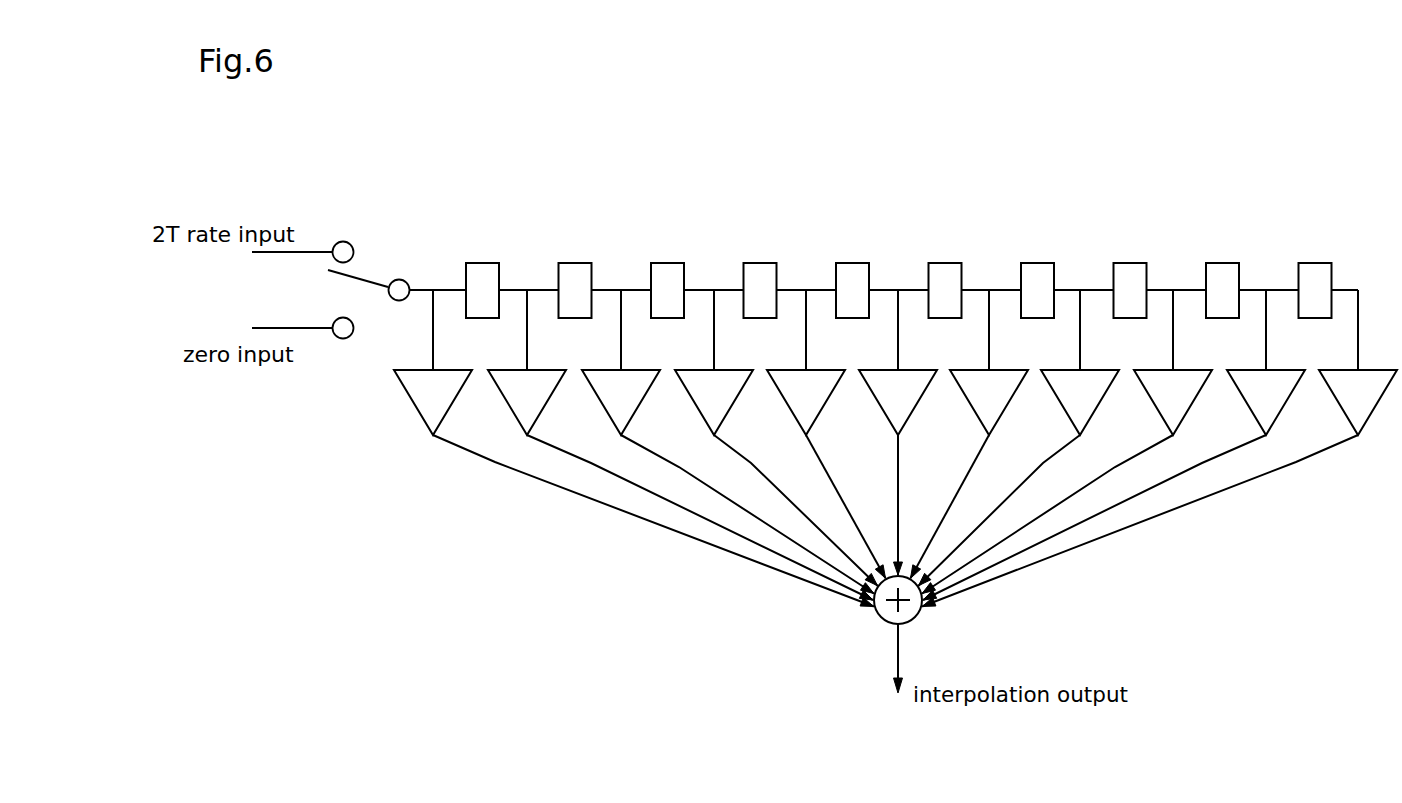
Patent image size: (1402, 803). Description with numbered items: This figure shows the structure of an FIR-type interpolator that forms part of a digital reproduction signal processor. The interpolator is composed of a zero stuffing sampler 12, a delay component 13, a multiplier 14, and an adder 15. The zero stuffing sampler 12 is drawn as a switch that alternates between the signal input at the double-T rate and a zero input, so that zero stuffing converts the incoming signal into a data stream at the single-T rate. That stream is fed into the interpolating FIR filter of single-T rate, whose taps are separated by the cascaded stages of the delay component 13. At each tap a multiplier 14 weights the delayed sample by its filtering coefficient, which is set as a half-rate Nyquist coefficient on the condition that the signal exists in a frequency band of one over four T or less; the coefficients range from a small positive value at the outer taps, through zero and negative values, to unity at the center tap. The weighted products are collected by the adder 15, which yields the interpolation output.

The zero stuffing sampler 12 is at (376, 262).
The delay component 13 is at (579, 262).
The multiplier 14 is at (416, 401).
The adder 15 is at (880, 624).